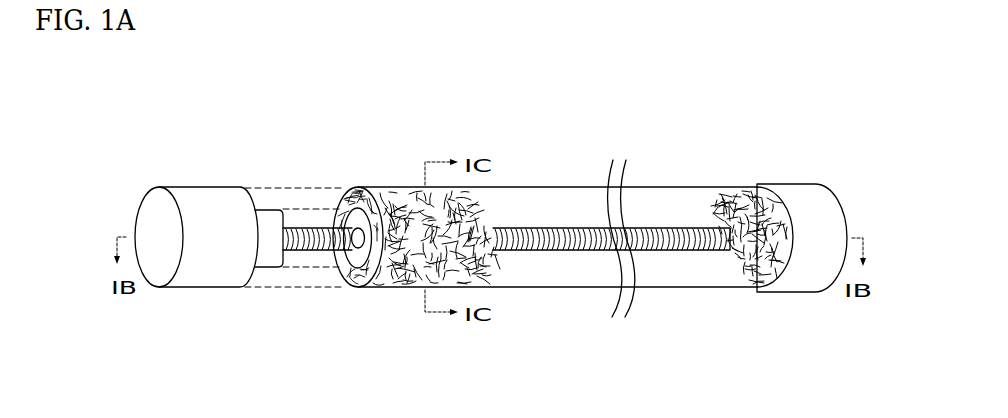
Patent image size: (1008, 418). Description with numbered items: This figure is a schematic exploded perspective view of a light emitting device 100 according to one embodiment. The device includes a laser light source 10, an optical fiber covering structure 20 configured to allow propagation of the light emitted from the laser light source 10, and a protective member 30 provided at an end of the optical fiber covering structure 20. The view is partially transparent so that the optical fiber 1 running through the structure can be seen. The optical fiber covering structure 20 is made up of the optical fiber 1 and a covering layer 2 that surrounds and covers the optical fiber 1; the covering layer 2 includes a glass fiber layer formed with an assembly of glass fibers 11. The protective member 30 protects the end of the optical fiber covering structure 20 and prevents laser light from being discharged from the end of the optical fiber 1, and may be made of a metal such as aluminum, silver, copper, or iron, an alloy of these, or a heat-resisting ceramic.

The light emitting device 100 is at (748, 100).
The laser light source 10 is at (213, 200).
The glass fibers 11 is at (398, 190).
The optical fiber 1 is at (573, 230).
The covering layer 2 is at (557, 289).
The optical fiber covering structure 20 is at (671, 171).
The protective member 30 is at (810, 203).